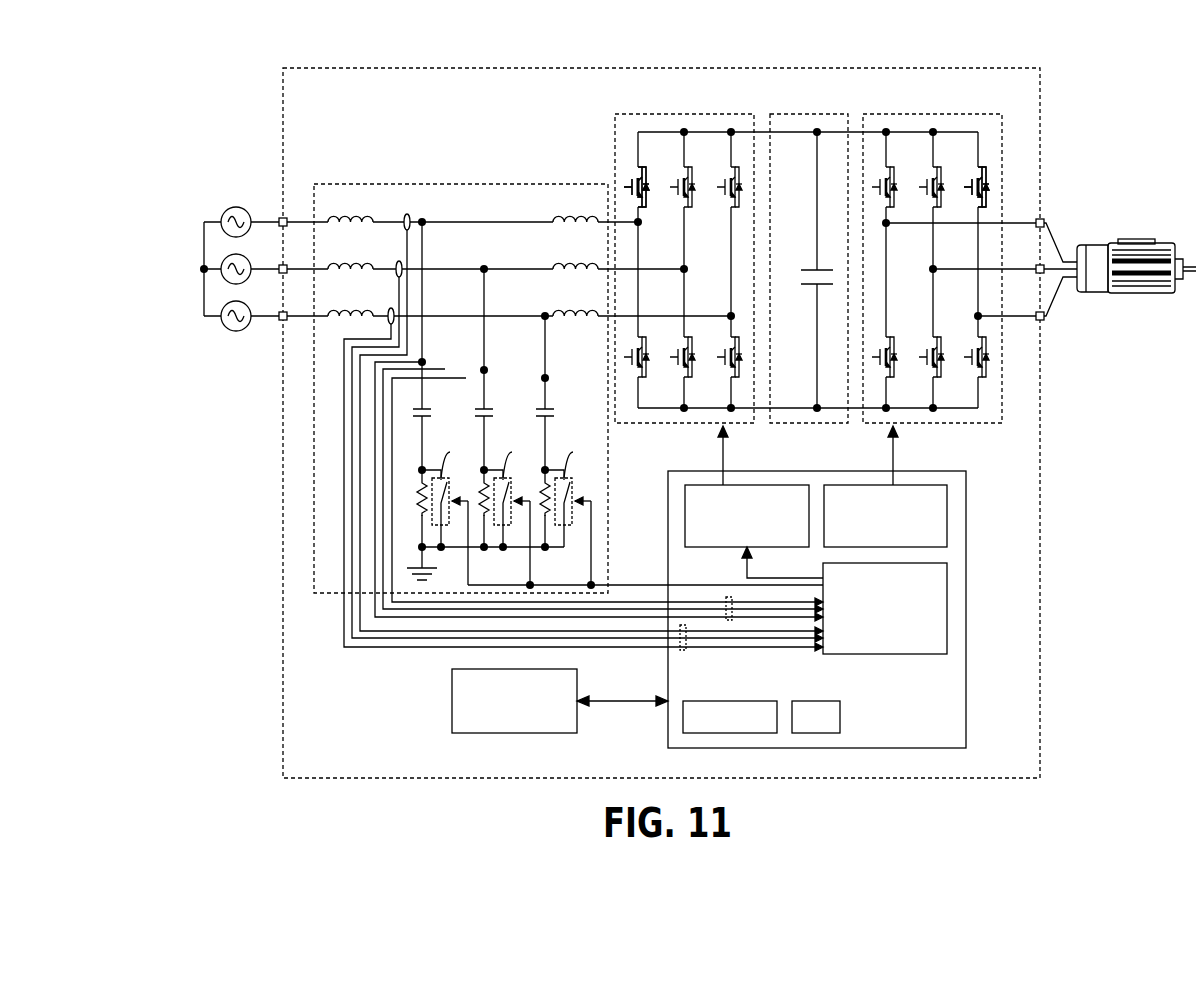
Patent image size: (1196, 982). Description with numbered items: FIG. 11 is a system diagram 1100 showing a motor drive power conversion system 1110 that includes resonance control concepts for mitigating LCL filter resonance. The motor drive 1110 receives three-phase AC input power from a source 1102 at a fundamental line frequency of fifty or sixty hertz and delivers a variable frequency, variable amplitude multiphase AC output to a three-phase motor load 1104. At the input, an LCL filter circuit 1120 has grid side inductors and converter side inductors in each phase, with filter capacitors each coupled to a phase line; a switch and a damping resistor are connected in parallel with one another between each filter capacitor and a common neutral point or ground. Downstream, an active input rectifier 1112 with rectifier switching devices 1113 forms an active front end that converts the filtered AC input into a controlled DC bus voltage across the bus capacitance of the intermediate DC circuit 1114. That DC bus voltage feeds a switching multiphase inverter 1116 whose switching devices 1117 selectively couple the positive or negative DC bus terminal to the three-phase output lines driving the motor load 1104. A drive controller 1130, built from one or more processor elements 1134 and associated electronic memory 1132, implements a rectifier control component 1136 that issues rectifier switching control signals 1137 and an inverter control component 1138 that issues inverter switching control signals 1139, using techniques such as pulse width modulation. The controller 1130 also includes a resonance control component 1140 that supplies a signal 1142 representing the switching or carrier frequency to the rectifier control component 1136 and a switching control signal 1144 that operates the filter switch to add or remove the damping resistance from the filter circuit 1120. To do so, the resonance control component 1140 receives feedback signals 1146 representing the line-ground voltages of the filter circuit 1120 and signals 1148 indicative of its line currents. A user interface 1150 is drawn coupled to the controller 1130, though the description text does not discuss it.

The system diagram 1100 is at (202, 64).
The source 1102 is at (230, 206).
The three-phase motor load 1104 is at (1139, 239).
The motor drive power conversion system 1110 is at (645, 68).
The active input rectifier 1112 is at (691, 114).
The rectifier switching devices 1113 is at (631, 153).
The intermediate DC circuit 1114 is at (815, 114).
The switching multiphase inverter 1116 is at (935, 114).
The inverter switching devices 1117 is at (963, 126).
The LCL filter circuit 1120 is at (462, 184).
The drive controller 1130 is at (951, 468).
The electronic memory 1132 is at (730, 701).
The processor element 1134 is at (815, 701).
The rectifier control component 1136 is at (754, 485).
The rectifier switching control signals 1137 is at (722, 453).
The inverter control component 1138 is at (947, 516).
The inverter switching control signals 1139 is at (895, 452).
The resonance control component 1140 is at (947, 608).
The switching frequency signal 1142 is at (747, 572).
The switching control signal 1144 is at (540, 585).
The feedback signals representing line-ground voltages 1146 is at (731, 620).
The signals indicative of line currents 1148 is at (683, 650).
The user interface 1150 is at (452, 704).